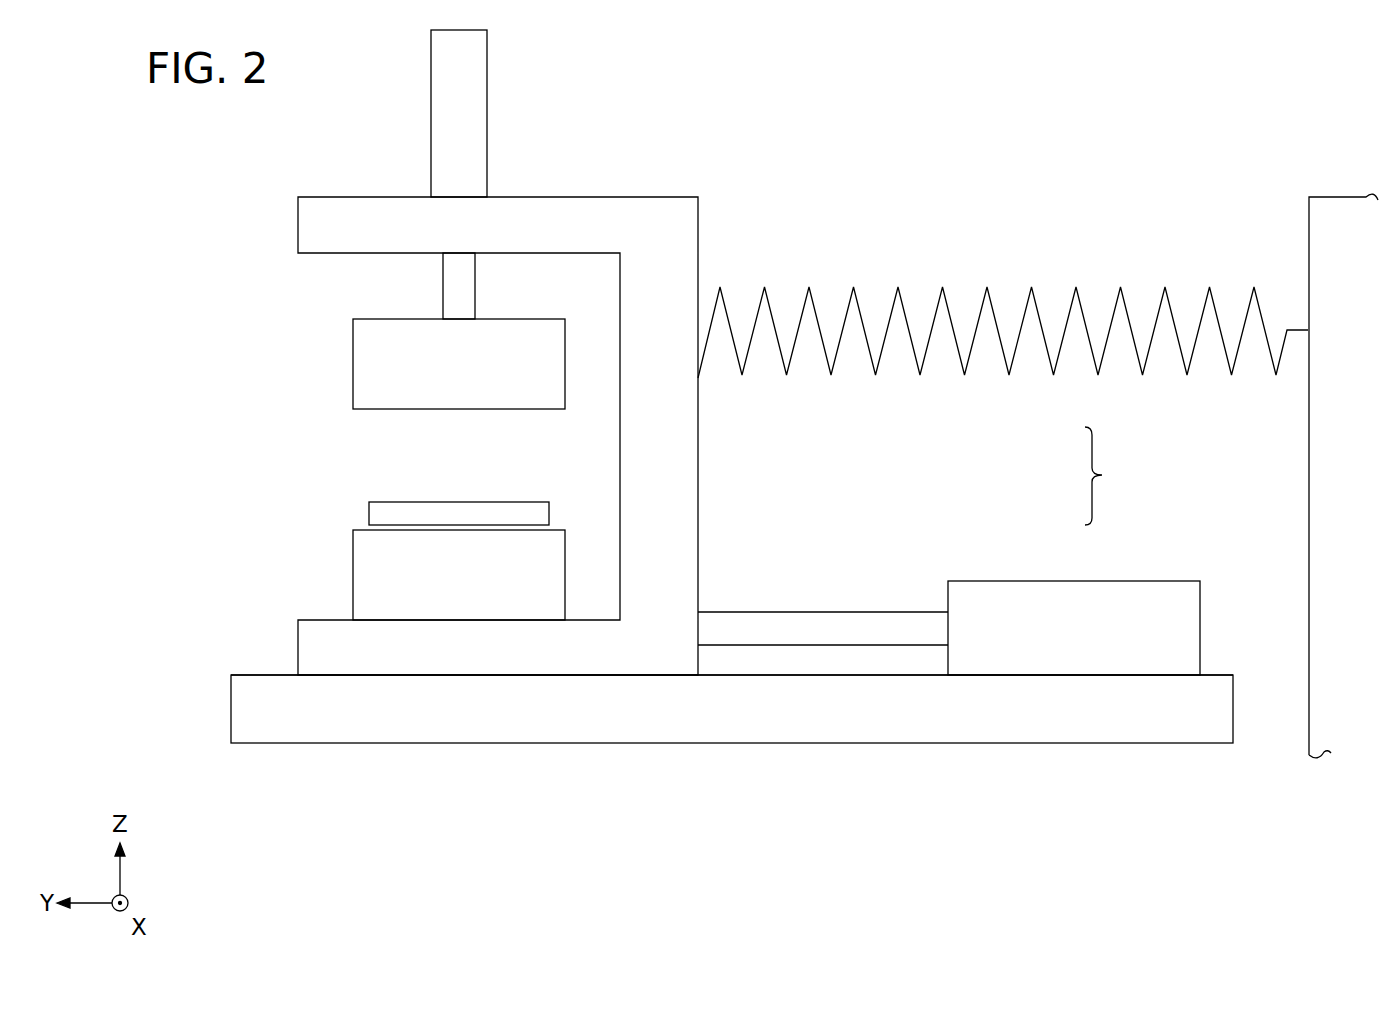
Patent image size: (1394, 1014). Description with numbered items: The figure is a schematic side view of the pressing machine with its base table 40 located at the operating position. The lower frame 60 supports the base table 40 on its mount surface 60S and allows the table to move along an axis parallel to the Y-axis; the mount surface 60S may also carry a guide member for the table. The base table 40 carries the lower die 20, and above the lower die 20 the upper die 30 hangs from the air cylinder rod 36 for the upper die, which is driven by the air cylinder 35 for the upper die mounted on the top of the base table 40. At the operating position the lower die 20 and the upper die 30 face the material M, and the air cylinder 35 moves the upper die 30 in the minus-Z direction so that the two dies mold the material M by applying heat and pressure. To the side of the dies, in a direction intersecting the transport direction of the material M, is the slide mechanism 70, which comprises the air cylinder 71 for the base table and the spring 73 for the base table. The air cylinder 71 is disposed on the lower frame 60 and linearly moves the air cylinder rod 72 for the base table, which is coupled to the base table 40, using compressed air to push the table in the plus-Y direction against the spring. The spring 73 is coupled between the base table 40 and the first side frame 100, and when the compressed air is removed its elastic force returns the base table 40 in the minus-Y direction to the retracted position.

The lower die 20 is at (358, 578).
The upper die 30 is at (358, 367).
The air cylinder for the upper die 35 is at (438, 110).
The air cylinder rod for the upper die 36 is at (446, 290).
The base table 40 is at (302, 233).
The lower frame 60 is at (237, 711).
The mount surface 60S is at (249, 673).
The slide mechanism 70 is at (1003, 481).
The air cylinder for the base table 71 is at (1062, 592).
The air cylinder rod for the base table 72 is at (848, 618).
The spring for the base table 73 is at (1063, 358).
The first side frame 100 is at (1329, 195).
The material M is at (373, 512).